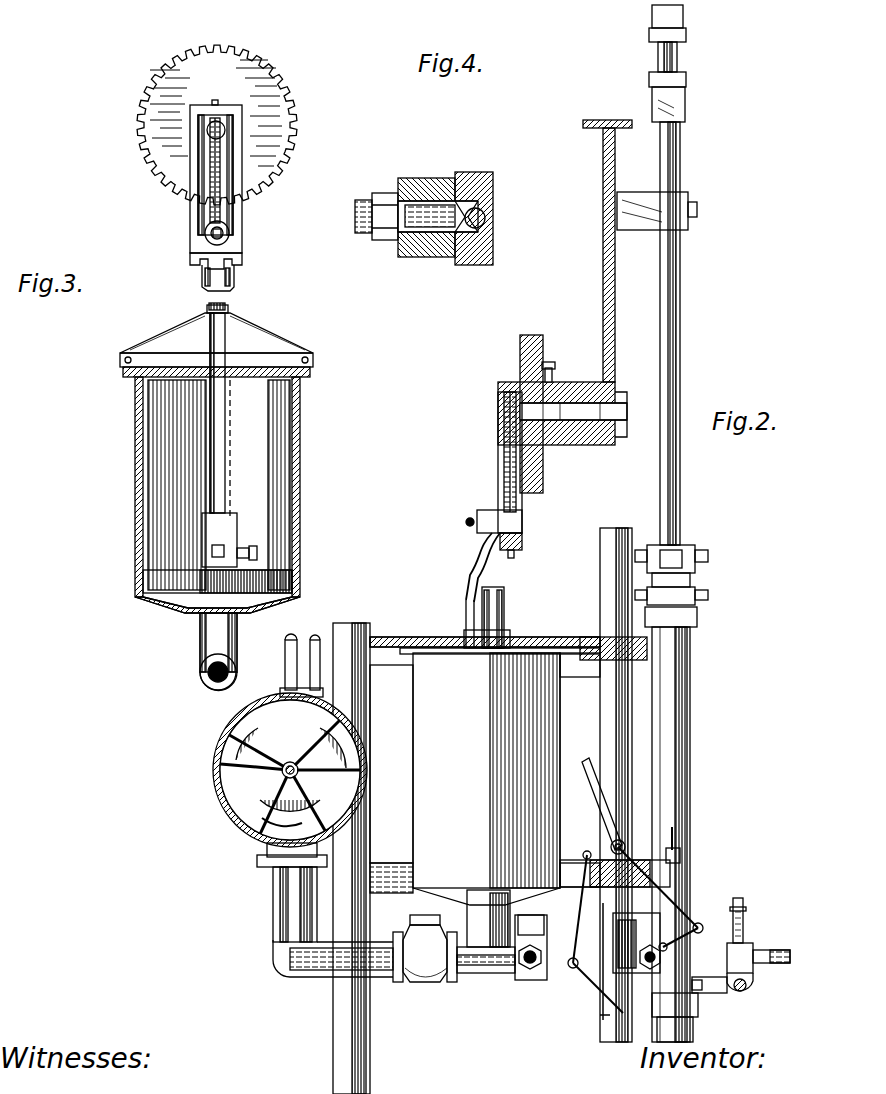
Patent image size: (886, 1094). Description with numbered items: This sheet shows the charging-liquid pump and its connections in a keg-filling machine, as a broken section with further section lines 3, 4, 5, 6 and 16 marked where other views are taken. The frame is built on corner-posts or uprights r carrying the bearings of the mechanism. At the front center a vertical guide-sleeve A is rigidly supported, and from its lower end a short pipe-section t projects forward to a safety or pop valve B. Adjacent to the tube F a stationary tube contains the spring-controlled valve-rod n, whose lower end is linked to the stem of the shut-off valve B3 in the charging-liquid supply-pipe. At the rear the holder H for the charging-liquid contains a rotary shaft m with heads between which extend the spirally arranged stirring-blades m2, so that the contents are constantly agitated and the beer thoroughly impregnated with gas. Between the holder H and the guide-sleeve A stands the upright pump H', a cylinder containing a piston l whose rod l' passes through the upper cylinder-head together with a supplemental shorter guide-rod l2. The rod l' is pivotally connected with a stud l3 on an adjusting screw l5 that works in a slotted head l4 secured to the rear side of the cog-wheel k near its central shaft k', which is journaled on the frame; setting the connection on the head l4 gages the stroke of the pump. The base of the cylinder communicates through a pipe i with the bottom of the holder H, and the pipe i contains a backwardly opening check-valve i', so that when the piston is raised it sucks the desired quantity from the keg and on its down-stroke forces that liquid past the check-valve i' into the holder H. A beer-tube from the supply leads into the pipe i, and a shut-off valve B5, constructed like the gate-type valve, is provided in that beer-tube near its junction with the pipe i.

In FIG. 3, the cog-wheel k is at (236, 125).
In FIG. 2, the cog-wheel k is at (595, 306).
In FIG. 3, the central shaft of cog-wheel k' is at (236, 137).
In FIG. 2, the central shaft of cog-wheel k' is at (571, 439).
In FIG. 3, the piston l is at (238, 579).
In FIG. 3, the piston rod l' is at (227, 281).
In FIG. 2, the piston rod l' is at (468, 590).
In FIG. 3, the supplemental guide-rod l2 is at (225, 455).
In FIG. 2, the supplemental guide-rod l2 is at (505, 595).
In FIG. 3, the stud l3 is at (206, 236).
In FIG. 4, the stud l3 is at (421, 245).
In FIG. 2, the stud l3 is at (524, 522).
In FIG. 3, the slotted head l4 is at (243, 207).
In FIG. 4, the slotted head l4 is at (476, 172).
In FIG. 2, the slotted head l4 is at (500, 403).
In FIG. 3, the adjusting screw l5 is at (214, 155).
In FIG. 4, the adjusting screw l5 is at (495, 218).
In FIG. 2, the adjusting screw l5 is at (503, 434).
In FIG. 2, the holder H is at (277, 750).
In FIG. 3, the pump H' is at (202, 459).
In FIG. 2, the pump H' is at (508, 771).
In FIG. 3, the pipe i is at (203, 652).
In FIG. 2, the pipe i is at (394, 941).
In FIG. 2, the check-valve i' is at (425, 969).
In FIG. 2, the tube F is at (682, 507).
In FIG. 2, the guide-sleeve A is at (693, 765).
In FIG. 2, the corner-posts r is at (603, 726).
In FIG. 2, the lever a is at (631, 889).
In FIG. 2, the spring-controlled valve-rod n is at (678, 835).
In FIG. 2, the safety valve B is at (750, 946).
In FIG. 2, the shut-off valve B3 is at (660, 935).
In FIG. 2, the shut-off valve B5 is at (540, 980).
In FIG. 2, the pipe-section t is at (703, 967).
In FIG. 2, the rotary shaft m is at (282, 770).
In FIG. 2, the stirring-blades m2 is at (262, 820).
In FIG. 2, the section line 16 is at (756, 1015).
In FIG. 2, the section line 3 is at (493, 975).
In FIG. 2, the section line 4 is at (468, 522).
In FIG. 2, the section line 5 is at (410, 915).
In FIG. 2, the section line 6 is at (282, 769).